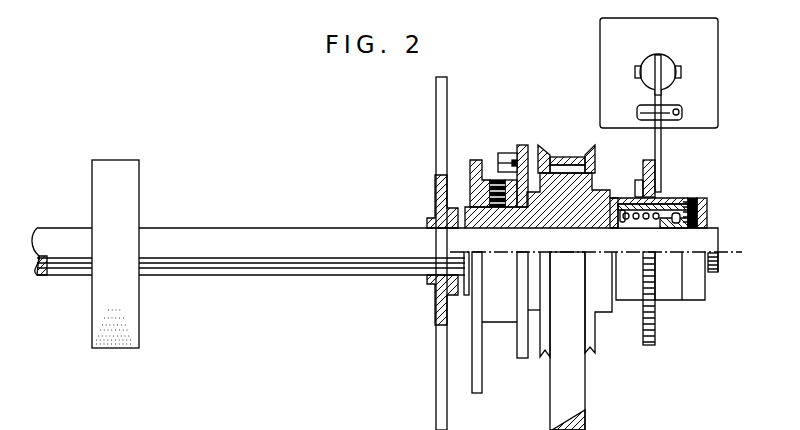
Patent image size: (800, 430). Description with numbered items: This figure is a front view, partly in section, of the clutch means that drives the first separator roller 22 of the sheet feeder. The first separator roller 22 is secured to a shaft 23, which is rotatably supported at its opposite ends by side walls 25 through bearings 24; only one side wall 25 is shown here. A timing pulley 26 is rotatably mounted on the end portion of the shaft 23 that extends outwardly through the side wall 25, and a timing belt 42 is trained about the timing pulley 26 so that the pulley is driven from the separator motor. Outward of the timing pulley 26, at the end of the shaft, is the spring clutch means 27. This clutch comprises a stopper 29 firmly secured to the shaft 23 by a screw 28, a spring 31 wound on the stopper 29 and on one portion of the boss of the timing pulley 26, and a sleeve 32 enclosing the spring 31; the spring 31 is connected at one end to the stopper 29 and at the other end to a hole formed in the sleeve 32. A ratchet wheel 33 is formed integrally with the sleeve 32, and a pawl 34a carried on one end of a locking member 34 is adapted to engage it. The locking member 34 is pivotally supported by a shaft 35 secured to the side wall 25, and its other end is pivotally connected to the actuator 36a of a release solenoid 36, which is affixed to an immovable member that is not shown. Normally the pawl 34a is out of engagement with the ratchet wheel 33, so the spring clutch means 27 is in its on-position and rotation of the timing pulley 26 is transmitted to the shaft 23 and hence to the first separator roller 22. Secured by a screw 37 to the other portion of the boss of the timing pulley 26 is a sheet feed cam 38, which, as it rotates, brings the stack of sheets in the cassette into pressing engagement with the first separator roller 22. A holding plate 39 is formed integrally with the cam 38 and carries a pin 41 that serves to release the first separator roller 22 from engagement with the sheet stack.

The first separator roller 22 is at (117, 163).
The shaft 23 is at (303, 230).
The bearings 24 is at (432, 218).
The side wall 25 is at (436, 135).
The timing pulley 26 is at (592, 338).
The spring clutch means 27 is at (740, 144).
The screw 28 is at (696, 200).
The stopper 29 is at (707, 213).
The spring 31 is at (692, 204).
The sleeve 32 is at (664, 206).
The ratchet wheel 33 is at (656, 324).
The locking member 34 is at (662, 95).
The pawl 34a is at (639, 187).
The shaft 35 is at (683, 118).
The release solenoid 36 is at (708, 45).
The actuator 36a is at (646, 62).
The screw 37 is at (491, 185).
The sheet feed cam 38 is at (475, 394).
The holding plate 39 is at (521, 358).
The pin 41 is at (508, 152).
The timing belt 42 is at (576, 394).